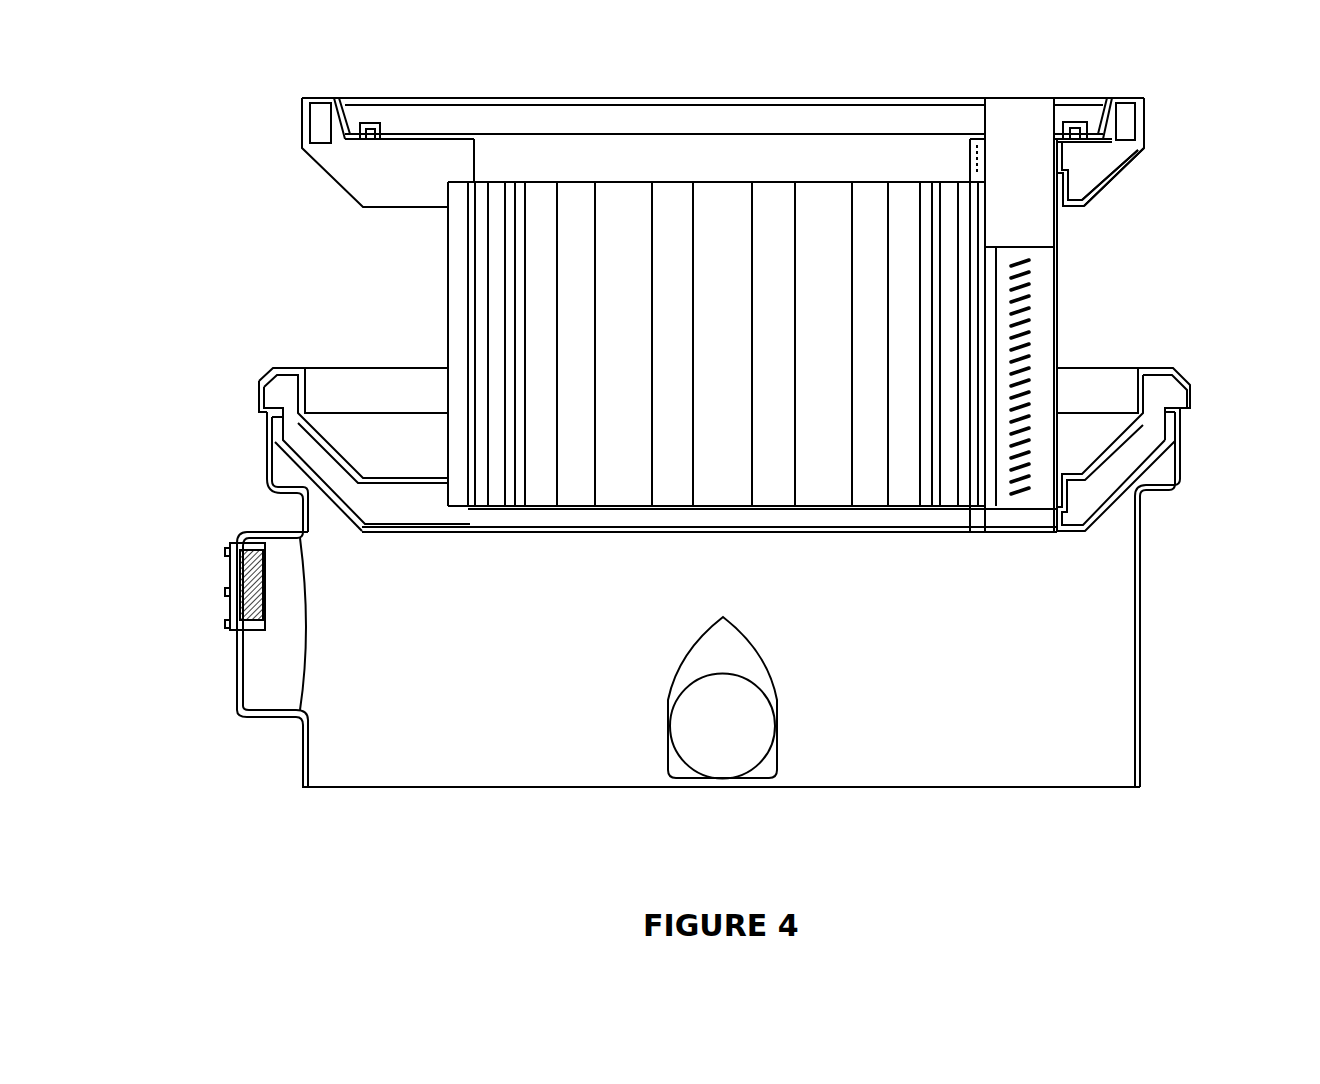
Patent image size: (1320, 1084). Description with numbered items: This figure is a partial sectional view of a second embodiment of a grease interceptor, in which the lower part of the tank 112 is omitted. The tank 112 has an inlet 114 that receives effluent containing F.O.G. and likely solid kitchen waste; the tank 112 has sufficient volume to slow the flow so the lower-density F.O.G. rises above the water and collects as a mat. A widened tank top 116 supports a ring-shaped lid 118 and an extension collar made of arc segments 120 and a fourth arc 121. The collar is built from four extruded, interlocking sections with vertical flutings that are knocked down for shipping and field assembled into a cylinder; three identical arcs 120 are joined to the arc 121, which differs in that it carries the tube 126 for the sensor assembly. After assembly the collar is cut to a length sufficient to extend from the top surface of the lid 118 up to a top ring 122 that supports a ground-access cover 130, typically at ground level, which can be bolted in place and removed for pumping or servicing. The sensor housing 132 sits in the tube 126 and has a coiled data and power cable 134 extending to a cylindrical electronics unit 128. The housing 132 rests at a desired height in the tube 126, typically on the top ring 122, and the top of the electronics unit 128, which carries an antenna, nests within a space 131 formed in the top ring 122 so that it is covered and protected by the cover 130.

The tank 112 is at (968, 778).
The inlet 114 is at (237, 670).
The widened tank top 116 is at (1163, 462).
The ring-shaped lid 118 is at (1150, 428).
The arc segments 120 is at (455, 305).
The fourth arc 121 is at (1048, 318).
The top ring 122 is at (1133, 160).
The tube 126 is at (1043, 270).
The electronics unit 128 is at (1018, 115).
The ground-access cover 130 is at (805, 100).
The space 131 is at (1046, 155).
The sensor housing 132 is at (1128, 578).
The coiled data and power cable 134 is at (1048, 345).